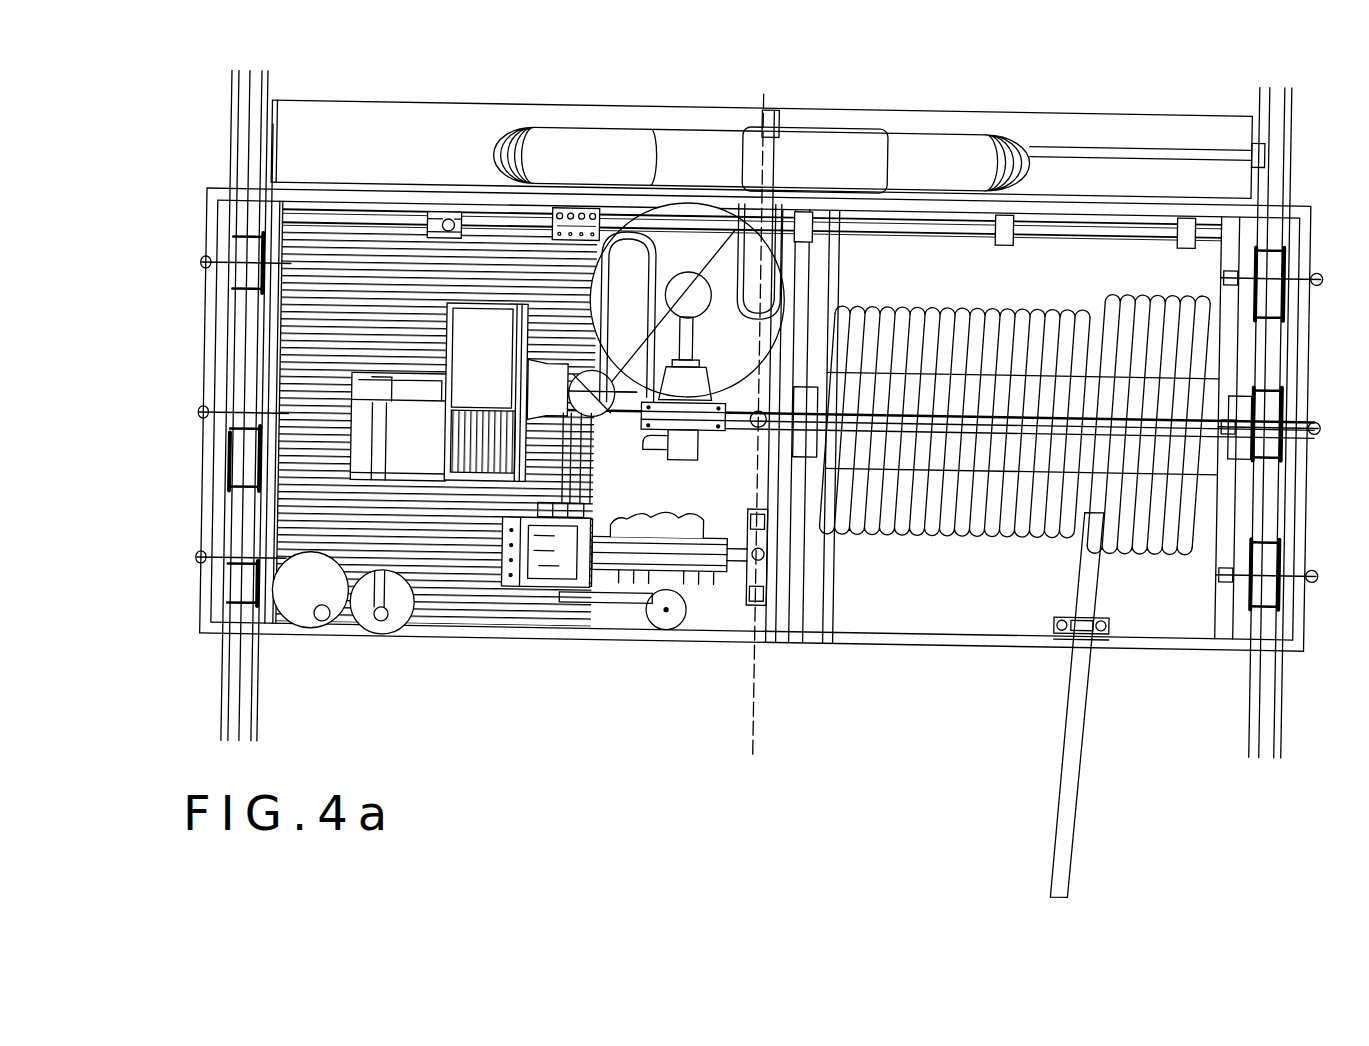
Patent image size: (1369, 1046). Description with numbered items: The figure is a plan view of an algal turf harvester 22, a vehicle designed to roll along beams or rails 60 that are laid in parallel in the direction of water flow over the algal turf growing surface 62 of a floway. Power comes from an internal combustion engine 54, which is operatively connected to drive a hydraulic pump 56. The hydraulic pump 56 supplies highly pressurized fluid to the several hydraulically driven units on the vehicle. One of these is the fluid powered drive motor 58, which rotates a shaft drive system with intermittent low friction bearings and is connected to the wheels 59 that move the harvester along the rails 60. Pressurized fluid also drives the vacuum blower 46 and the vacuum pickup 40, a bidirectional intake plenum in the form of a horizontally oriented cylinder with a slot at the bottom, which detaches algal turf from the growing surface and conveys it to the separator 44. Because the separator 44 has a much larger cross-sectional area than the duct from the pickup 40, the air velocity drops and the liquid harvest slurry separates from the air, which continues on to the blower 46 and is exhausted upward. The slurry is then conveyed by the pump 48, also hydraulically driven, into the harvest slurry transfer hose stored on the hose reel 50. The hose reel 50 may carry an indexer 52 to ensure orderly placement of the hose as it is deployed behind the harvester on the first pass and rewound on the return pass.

The harvester 22 is at (1006, 125).
The vacuum pickup 40 is at (1183, 170).
The separator 44 is at (632, 272).
The vacuum blower 46 is at (495, 347).
The pump 48 is at (685, 447).
The hose reel 50 is at (1060, 520).
The indexer 52 is at (1072, 750).
The internal combustion engine 54 is at (672, 580).
The hydraulic pump 56 is at (545, 577).
The drive motor 58 is at (420, 188).
The wheels 59 is at (1262, 583).
The rails 60 is at (245, 683).
The algal turf growing surface 62 is at (694, 424).